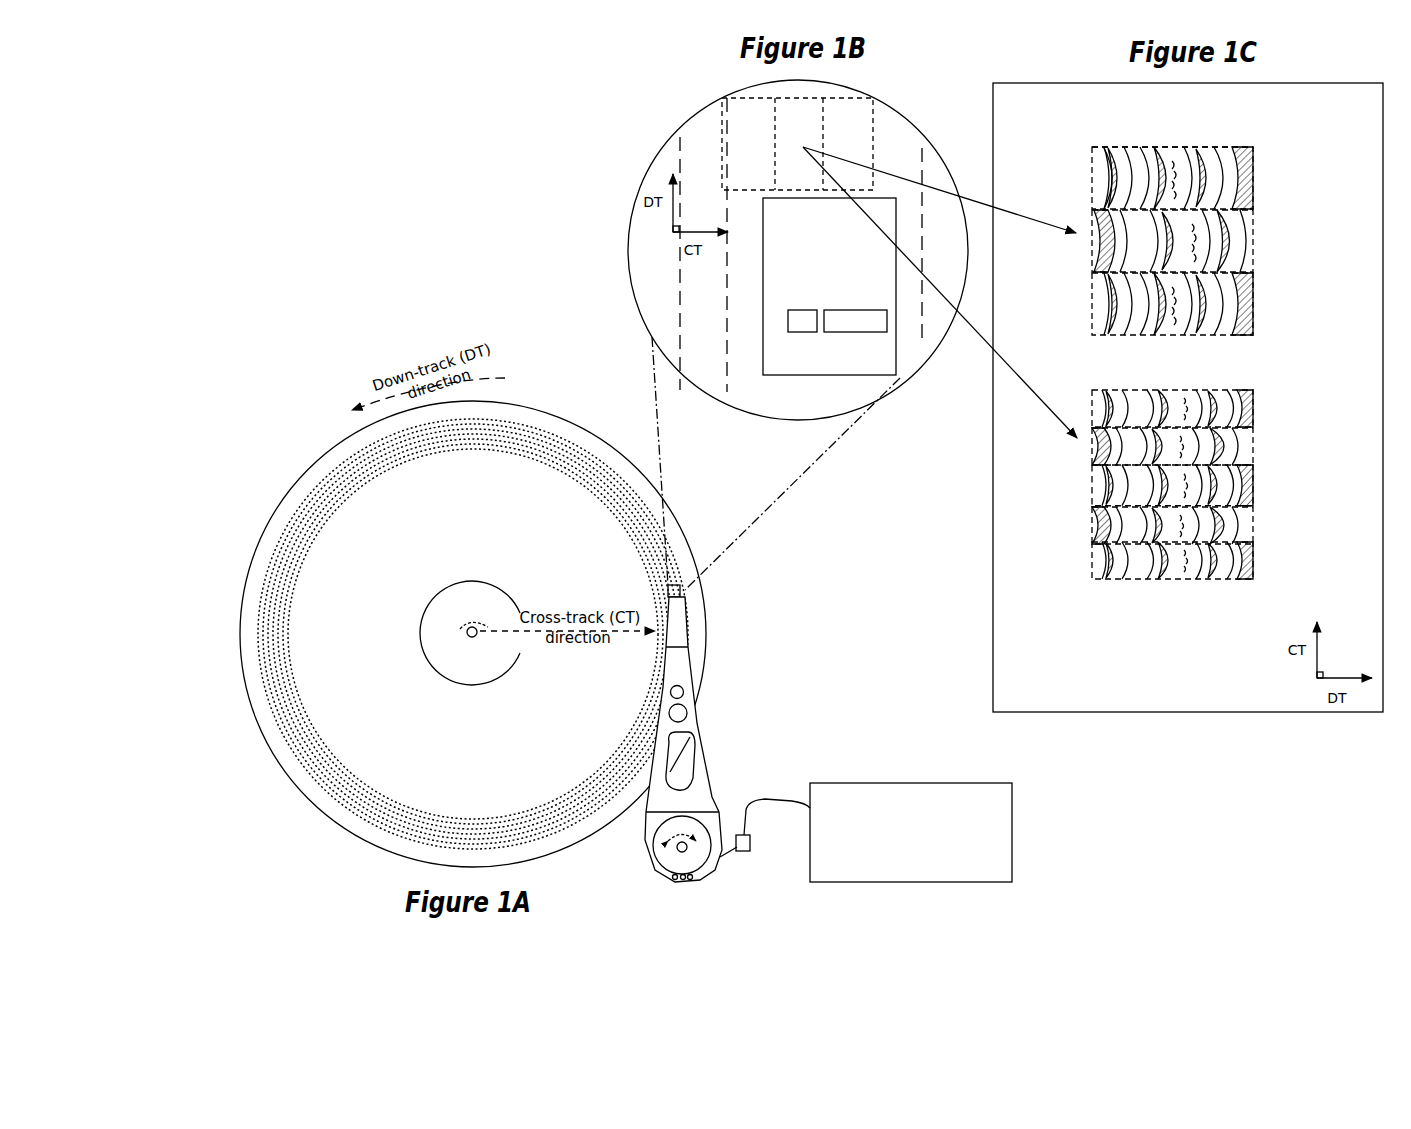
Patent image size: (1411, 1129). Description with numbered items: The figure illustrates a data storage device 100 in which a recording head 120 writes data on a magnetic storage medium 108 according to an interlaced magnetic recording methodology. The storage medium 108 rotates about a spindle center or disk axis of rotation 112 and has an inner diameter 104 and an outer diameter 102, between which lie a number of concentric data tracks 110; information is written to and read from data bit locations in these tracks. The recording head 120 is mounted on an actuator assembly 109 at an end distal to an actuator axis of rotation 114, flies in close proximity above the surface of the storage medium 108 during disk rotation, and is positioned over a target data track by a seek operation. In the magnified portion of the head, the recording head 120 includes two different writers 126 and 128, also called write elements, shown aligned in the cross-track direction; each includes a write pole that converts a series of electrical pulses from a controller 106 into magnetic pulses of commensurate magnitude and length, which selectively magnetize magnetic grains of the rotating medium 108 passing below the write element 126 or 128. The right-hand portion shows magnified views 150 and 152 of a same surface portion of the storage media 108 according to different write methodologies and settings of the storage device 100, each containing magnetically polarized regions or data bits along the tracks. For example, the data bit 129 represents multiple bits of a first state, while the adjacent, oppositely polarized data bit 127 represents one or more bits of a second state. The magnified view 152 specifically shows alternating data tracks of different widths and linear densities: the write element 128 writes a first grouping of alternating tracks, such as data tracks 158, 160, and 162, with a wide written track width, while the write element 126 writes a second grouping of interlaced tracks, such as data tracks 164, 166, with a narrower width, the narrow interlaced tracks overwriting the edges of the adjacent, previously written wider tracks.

In FIG. 1A, the data storage device 100 is at (373, 181).
In FIG. 1A, the outer diameter 102 is at (316, 460).
In FIG. 1A, the inner diameter 104 is at (421, 638).
In FIG. 1A, the controller 106 is at (911, 832).
In FIG. 1A, the magnetic storage medium 108 is at (340, 823).
In FIG. 1A, the actuator assembly 109 is at (700, 725).
In FIG. 1A, the concentric data tracks 110 is at (303, 770).
In FIG. 1A, the disk axis of rotation 112 is at (463, 627).
In FIG. 1A, the actuator axis of rotation 114 is at (666, 853).
In FIG. 1A, the recording head 120 is at (690, 590).
In FIG. 1B, the recording head 120 is at (896, 353).
In FIG. 1B, the writer 126 is at (792, 332).
In FIG. 1C, the data bit 127 is at (1091, 146).
In FIG. 1B, the writer 128 is at (855, 321).
In FIG. 1C, the data bit 129 is at (1122, 148).
In FIG. 1C, the magnified view 150 is at (1092, 186).
In FIG. 1C, the magnified view 152 is at (1198, 390).
In FIG. 1C, the data track 158 is at (1262, 402).
In FIG. 1C, the data track 160 is at (1262, 487).
In FIG. 1C, the data track 162 is at (1262, 562).
In FIG. 1C, the data track 164 is at (1262, 445).
In FIG. 1C, the data track 166 is at (1262, 522).